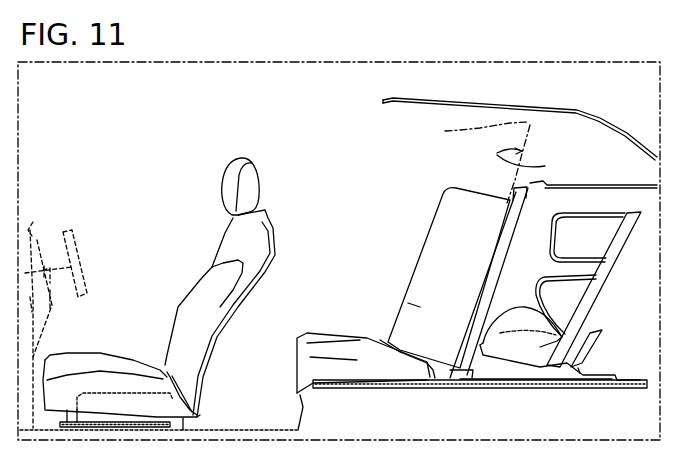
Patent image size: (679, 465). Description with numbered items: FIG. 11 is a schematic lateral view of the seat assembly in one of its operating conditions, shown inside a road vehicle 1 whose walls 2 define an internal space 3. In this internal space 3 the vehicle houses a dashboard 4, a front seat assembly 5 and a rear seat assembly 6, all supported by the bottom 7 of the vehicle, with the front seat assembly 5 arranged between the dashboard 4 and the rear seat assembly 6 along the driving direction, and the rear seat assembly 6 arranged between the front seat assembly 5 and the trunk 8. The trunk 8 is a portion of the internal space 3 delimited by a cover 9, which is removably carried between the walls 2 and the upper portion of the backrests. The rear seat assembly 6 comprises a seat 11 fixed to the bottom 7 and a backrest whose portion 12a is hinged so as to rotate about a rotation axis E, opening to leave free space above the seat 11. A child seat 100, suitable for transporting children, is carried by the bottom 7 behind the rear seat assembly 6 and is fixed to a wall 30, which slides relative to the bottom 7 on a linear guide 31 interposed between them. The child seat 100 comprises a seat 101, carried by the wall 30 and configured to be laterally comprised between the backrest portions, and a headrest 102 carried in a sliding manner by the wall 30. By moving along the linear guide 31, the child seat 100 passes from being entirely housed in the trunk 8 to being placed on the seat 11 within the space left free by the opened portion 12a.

The road vehicle 1 is at (548, 86).
The walls 2 is at (600, 118).
The internal space 3 is at (338, 229).
The dashboard 4 is at (33, 222).
The front seat assemblies 5 is at (181, 148).
The rear seat assemblies 6 is at (373, 137).
The bottom 7 is at (320, 390).
The trunk 8 is at (636, 349).
The cover 9 is at (568, 183).
The seat 11 is at (362, 350).
The backrest portion 12a is at (443, 242).
The wall 30 is at (620, 248).
The linear guide 31 is at (558, 388).
The child seat 100 is at (537, 369).
The seat of the child seat 101 is at (512, 325).
The headrest 102 is at (587, 240).